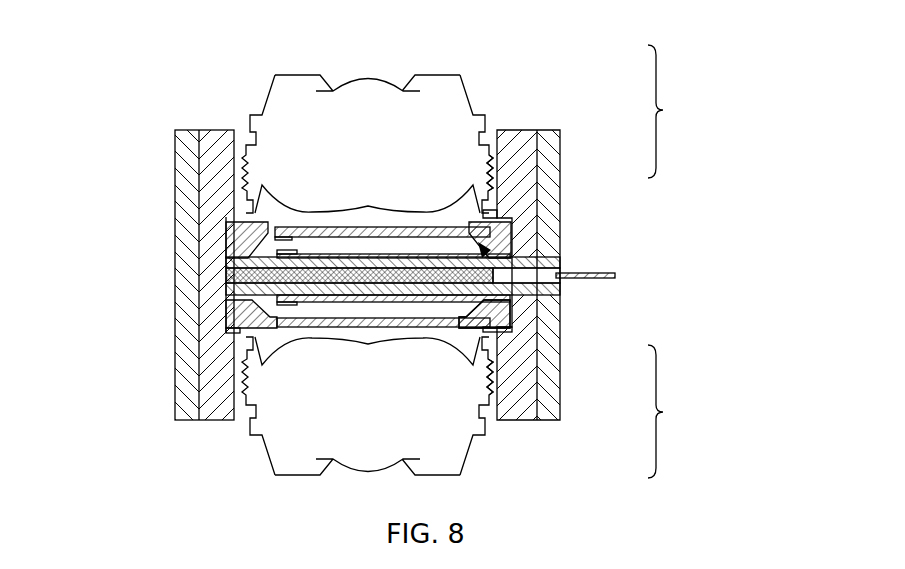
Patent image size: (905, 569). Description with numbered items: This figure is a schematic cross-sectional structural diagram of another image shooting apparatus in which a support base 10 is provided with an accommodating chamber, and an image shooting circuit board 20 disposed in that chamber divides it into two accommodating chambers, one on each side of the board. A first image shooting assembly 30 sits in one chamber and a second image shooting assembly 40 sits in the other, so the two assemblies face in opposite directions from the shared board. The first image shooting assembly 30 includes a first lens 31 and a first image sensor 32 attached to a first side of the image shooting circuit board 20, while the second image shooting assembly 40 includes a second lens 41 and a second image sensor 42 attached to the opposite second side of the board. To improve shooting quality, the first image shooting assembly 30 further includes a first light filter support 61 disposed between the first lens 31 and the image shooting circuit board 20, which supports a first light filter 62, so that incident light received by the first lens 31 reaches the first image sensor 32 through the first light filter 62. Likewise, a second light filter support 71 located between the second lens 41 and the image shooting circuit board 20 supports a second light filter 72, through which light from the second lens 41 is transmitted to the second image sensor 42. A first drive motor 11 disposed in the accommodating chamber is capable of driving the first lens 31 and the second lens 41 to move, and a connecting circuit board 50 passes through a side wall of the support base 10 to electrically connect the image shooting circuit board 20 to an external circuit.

The support base 10 is at (153, 240).
The first drive motor 11 is at (216, 130).
The image shooting circuit board 20 is at (505, 228).
The first image shooting assembly 30 is at (473, 151).
The first lens 31 is at (438, 132).
The first image sensor 32 is at (543, 180).
The second image shooting assembly 40 is at (473, 389).
The second lens 41 is at (468, 458).
The second image sensor 42 is at (552, 372).
The connecting circuit board 50 is at (577, 280).
The first light filter support 61 is at (560, 180).
The first light filter 62 is at (457, 171).
The second light filter support 71 is at (493, 332).
The second light filter 72 is at (455, 369).